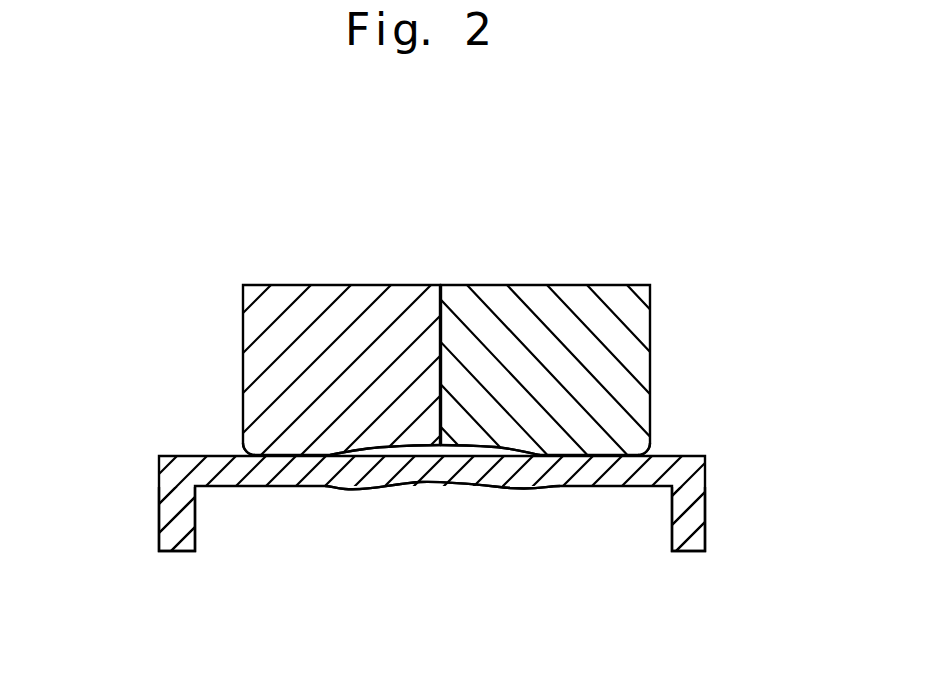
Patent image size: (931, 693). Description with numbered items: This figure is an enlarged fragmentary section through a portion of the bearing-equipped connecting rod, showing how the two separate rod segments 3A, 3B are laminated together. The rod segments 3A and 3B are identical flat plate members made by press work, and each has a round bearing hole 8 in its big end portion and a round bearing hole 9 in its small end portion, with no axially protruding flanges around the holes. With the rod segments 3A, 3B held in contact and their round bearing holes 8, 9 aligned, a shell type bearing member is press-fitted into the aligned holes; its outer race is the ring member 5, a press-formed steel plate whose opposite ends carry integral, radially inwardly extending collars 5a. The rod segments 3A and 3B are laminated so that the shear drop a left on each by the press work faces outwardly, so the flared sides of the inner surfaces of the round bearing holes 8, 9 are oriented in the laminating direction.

The separate rod segment 3A is at (357, 302).
The separate rod segment 3B is at (545, 303).
The ring member 5 is at (180, 451).
The collar 5a is at (160, 517).
The shear drop a is at (240, 443).
The round bearing hole 8 is at (323, 463).
The round bearing hole 9 is at (428, 537).